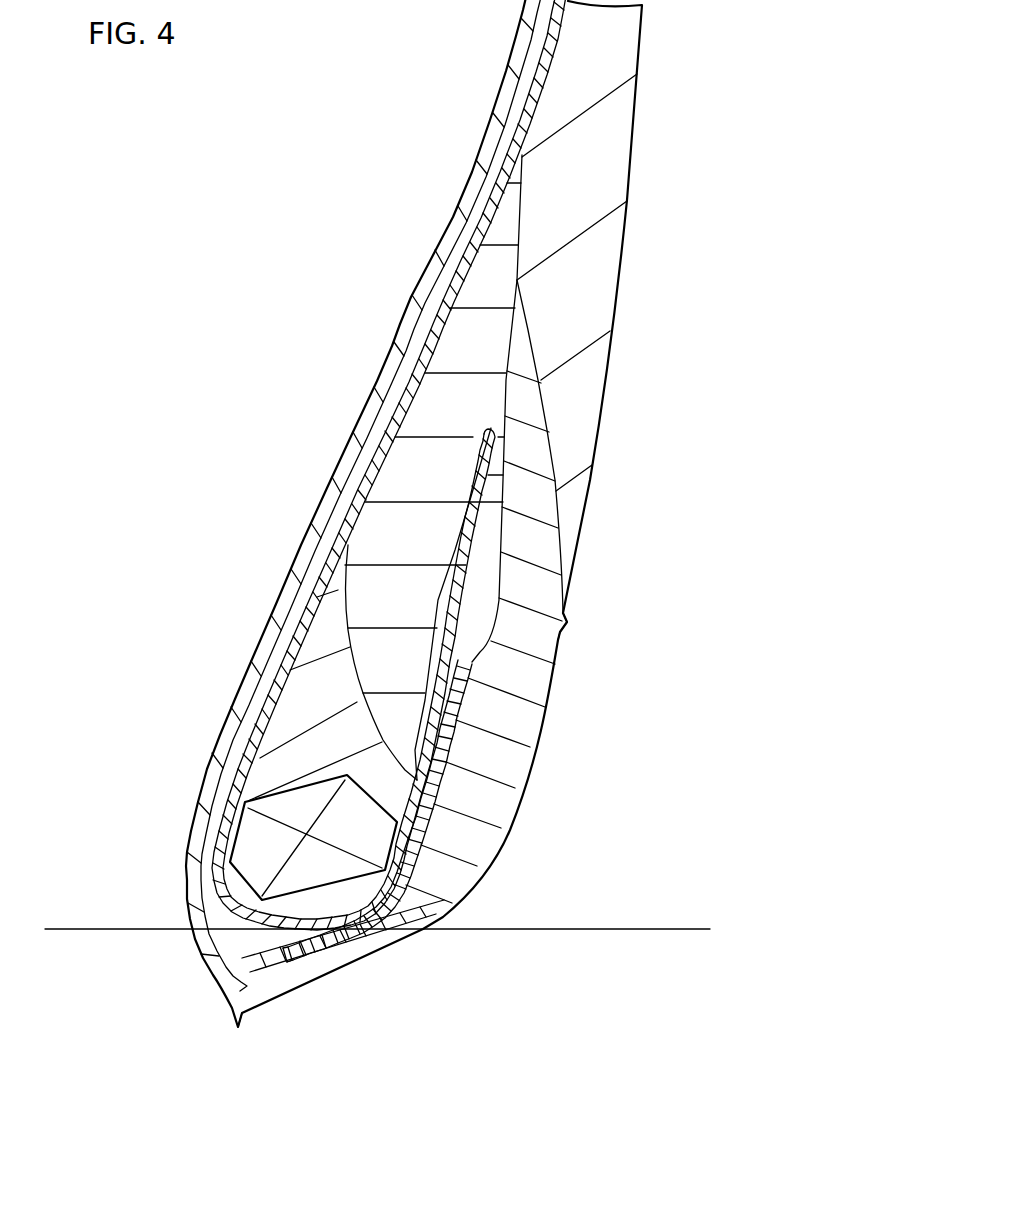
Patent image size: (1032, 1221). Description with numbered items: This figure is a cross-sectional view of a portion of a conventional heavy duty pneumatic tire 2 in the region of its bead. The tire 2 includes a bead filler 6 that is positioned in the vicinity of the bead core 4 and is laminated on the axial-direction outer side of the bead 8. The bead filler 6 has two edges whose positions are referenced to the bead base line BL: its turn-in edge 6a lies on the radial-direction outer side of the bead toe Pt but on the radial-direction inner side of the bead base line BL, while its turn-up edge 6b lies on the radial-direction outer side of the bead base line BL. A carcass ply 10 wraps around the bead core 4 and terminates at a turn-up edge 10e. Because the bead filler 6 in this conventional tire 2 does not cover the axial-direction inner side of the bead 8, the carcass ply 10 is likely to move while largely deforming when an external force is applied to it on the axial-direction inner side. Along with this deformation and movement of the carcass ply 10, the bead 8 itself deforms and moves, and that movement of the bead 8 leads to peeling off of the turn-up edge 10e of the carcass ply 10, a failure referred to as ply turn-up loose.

The heavy duty pneumatic tire 2 is at (306, 174).
The bead core 4 is at (253, 831).
The bead filler 6 is at (417, 835).
The turn-in edge 6a is at (290, 952).
The turn-up edge 6b is at (479, 646).
The bead 8 is at (324, 687).
The carcass ply 10 is at (395, 428).
The turn-up edge 10e is at (473, 548).
The bead base line BL is at (596, 929).
The bead toe Pt is at (238, 1028).